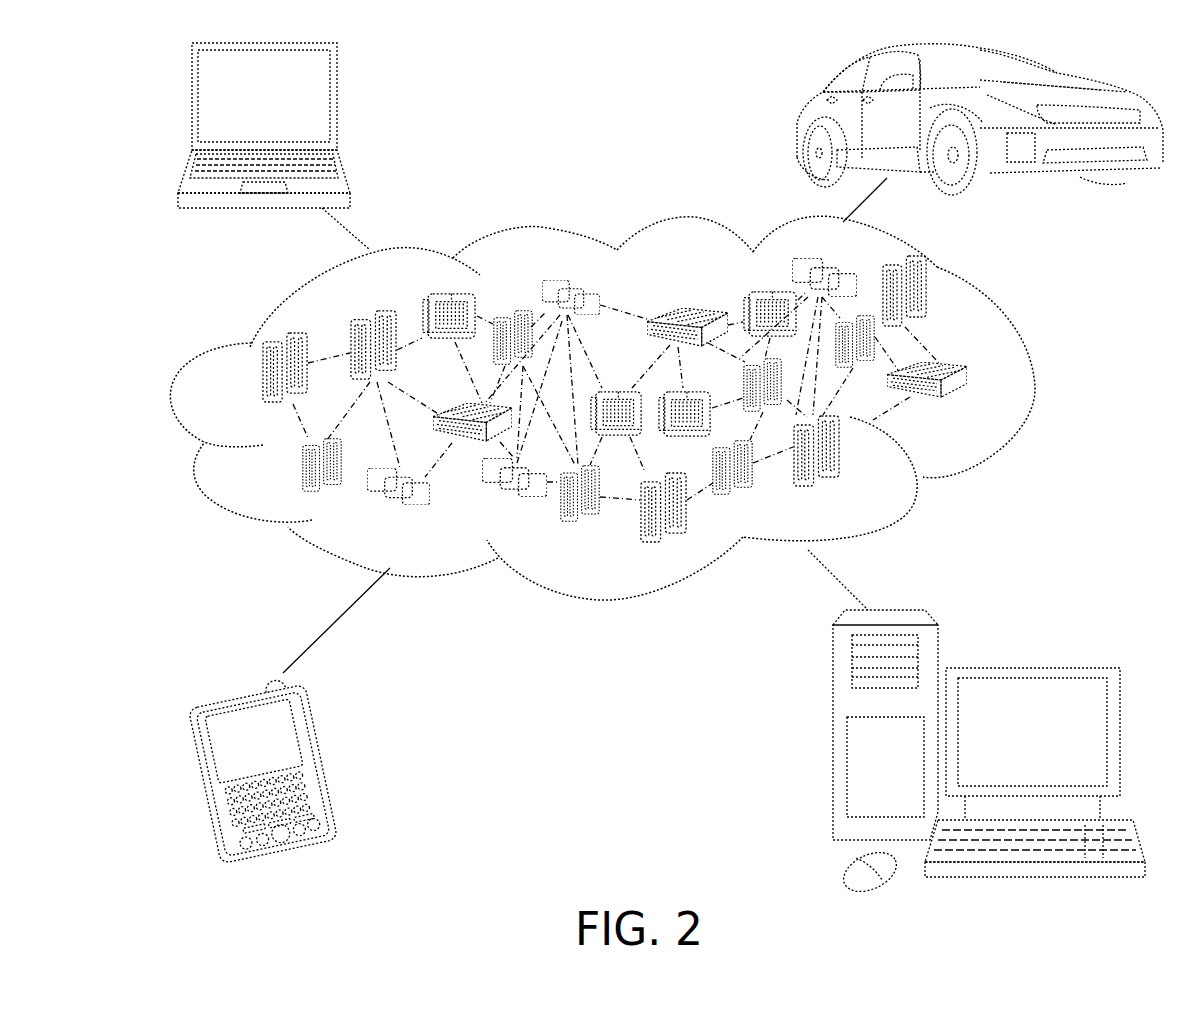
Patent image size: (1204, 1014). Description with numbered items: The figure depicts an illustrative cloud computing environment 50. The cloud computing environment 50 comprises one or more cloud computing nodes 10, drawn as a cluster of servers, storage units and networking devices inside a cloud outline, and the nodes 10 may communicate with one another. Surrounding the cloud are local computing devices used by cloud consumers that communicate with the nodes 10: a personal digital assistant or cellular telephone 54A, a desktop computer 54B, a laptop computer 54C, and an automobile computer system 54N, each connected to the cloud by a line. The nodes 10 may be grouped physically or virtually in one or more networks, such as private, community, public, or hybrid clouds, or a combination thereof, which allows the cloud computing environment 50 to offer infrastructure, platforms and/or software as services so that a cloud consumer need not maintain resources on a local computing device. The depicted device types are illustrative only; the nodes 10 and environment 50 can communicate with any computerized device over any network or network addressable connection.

The cloud computing environment 50 is at (632, 408).
The cloud computing nodes 10 is at (980, 413).
The personal digital assistant (PDA) or cellular telephone 54A is at (324, 762).
The desktop computer 54B is at (1030, 668).
The laptop computer 54C is at (335, 101).
The automobile computer system 54N is at (797, 120).